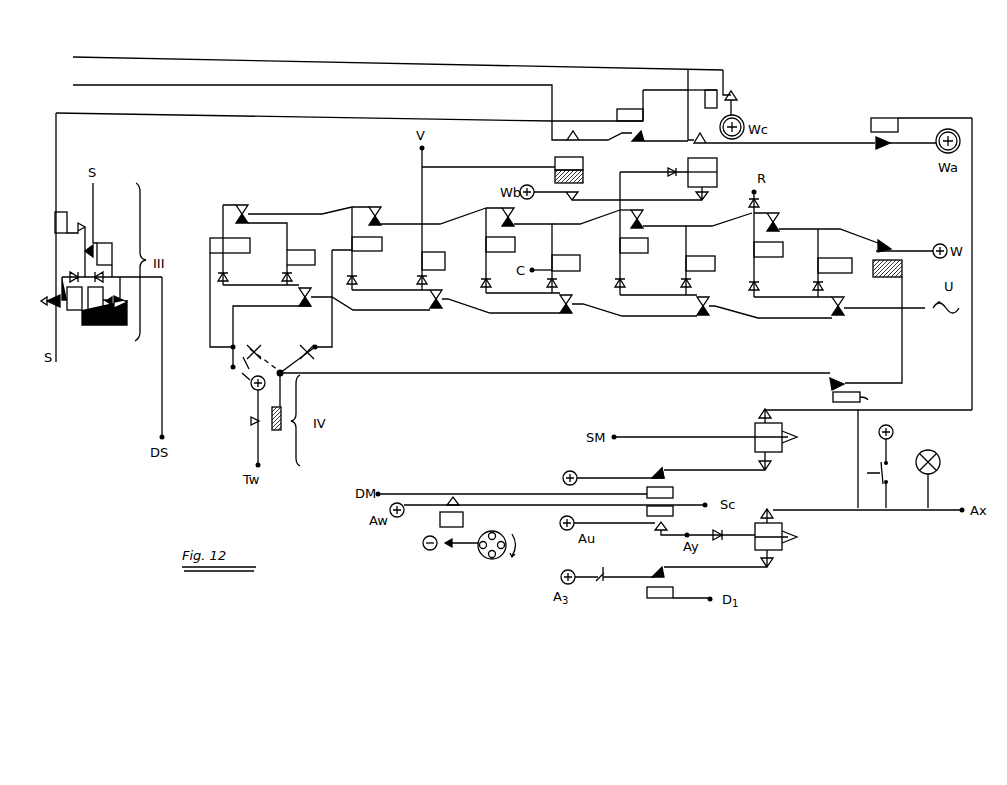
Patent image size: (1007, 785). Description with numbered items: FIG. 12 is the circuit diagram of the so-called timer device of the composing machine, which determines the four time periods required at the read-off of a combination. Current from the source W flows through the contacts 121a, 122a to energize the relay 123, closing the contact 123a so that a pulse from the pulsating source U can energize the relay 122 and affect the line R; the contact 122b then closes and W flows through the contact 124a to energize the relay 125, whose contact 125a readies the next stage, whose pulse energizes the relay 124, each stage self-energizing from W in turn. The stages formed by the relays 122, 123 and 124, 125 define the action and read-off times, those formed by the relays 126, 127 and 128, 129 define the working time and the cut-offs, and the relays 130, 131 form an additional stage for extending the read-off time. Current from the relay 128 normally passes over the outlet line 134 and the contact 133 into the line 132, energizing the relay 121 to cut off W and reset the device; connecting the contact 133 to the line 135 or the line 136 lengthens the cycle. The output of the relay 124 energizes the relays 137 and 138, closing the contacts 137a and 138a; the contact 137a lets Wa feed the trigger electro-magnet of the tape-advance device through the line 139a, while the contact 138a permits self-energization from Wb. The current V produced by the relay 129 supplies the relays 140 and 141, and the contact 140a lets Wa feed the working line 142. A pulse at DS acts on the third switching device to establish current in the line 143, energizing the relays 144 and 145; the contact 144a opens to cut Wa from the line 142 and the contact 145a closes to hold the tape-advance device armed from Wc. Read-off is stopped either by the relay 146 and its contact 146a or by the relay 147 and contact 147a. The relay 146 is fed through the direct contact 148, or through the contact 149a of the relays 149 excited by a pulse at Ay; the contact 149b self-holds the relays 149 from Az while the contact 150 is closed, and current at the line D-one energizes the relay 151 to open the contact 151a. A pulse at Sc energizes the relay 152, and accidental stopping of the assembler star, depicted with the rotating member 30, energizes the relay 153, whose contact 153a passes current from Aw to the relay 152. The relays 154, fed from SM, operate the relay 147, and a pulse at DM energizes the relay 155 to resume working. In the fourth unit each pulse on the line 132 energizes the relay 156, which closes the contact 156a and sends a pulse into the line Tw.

The motor 30 is at (496, 559).
The relay 121 is at (902, 268).
The contact 121a is at (892, 240).
The relay 122 is at (770, 252).
The contact 122a is at (781, 220).
The contact 122b is at (773, 207).
The relay 123 is at (840, 273).
The contact 123a is at (846, 314).
The relay 124 is at (635, 253).
The contact 124a is at (643, 232).
The relay 125 is at (712, 253).
The contact 125a is at (707, 315).
The relay 126 is at (515, 249).
The relay 127 is at (575, 254).
The relay 128 is at (382, 248).
The relay 129 is at (443, 252).
The relay 130 is at (212, 246).
The relay 131 is at (302, 262).
The line 132 is at (487, 372).
The contact 133 is at (290, 372).
The outlet line 134 is at (335, 333).
The line 135 is at (208, 322).
The line 136 is at (234, 333).
The relay 137 is at (717, 165).
The contact 137a is at (694, 144).
The relay 138 is at (717, 190).
The contact 138a is at (703, 200).
The line 139a is at (213, 59).
The relay 140 is at (583, 162).
The contact 140a is at (568, 141).
The relay 141 is at (583, 178).
The working line 142 is at (368, 90).
The line 143 is at (57, 135).
The relay 144 is at (628, 109).
The contact 144a is at (643, 137).
The relay 145 is at (718, 90).
The contact 145a is at (737, 96).
The relay 146 is at (860, 397).
The contact 146a is at (842, 377).
The relay 147 is at (888, 118).
The contact 147a is at (880, 152).
The direct contact 148 is at (886, 473).
The relays 149 is at (782, 542).
The contact 149a is at (770, 510).
The contact 149b is at (775, 568).
The contact 150 is at (602, 583).
The relay 151 is at (673, 598).
The contact 151a is at (659, 571).
The relay 152 is at (673, 512).
The relay 153 is at (440, 519).
The contact 153a is at (459, 505).
The relays 154 is at (782, 439).
The relay 155 is at (673, 490).
The relay 156 is at (281, 430).
The contact 156a is at (250, 421).